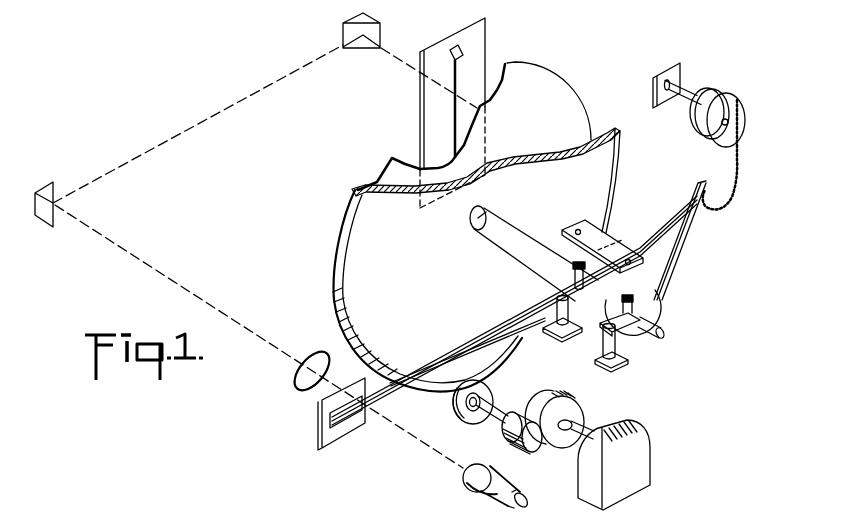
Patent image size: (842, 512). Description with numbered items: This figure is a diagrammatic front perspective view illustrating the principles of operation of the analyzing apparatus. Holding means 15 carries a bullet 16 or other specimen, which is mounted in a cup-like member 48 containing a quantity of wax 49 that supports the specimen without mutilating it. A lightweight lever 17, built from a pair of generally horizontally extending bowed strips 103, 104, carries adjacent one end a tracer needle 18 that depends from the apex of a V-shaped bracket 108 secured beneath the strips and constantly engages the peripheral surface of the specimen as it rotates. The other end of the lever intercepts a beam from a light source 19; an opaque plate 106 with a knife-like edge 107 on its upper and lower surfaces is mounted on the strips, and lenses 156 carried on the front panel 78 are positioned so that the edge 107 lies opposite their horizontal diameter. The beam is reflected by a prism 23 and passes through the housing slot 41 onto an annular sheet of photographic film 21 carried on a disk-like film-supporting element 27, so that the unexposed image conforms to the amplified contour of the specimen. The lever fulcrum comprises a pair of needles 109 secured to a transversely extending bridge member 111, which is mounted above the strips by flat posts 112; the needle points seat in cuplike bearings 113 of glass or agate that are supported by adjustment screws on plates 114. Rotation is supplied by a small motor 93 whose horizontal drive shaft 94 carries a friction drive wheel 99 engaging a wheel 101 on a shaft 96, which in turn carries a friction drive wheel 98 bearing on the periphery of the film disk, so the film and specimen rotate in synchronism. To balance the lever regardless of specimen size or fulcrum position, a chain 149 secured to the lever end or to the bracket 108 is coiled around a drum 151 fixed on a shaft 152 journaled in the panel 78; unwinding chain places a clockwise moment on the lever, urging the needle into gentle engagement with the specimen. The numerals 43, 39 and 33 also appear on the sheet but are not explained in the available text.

The prism 23 is at (373, 20).
The housing slot 41 is at (456, 90).
The photographic film 21 is at (561, 86).
The film-supporting element 27 is at (574, 201).
The needles 109 is at (577, 246).
The bridge member 111 is at (603, 237).
The lever 17 is at (484, 322).
The bowed strip 103 is at (461, 344).
The bowed strip 104 is at (520, 330).
The V-shaped bracket 108 is at (673, 260).
The holding means 15 is at (678, 293).
The needle 18 is at (662, 311).
The bullet 16 is at (662, 328).
The wax 49 is at (635, 332).
The cup-like member 48 is at (627, 332).
The flat posts 112 is at (591, 292).
The cuplike bearings 113 is at (590, 332).
The plates 114 is at (618, 360).
The lenses 156 is at (306, 346).
The knife-like edge 107 is at (323, 403).
The opaque plate 106 is at (324, 424).
The friction drive wheel 98 is at (463, 422).
The shaft 96 is at (497, 403).
The friction drive wheel 101 is at (532, 452).
The friction drive wheel 99 is at (564, 405).
The drive shaft 94 is at (590, 424).
The motor 93 is at (648, 474).
The light source 19 is at (468, 485).
The shaft 152 is at (686, 87).
The drum 151 is at (744, 106).
The chain 149 is at (740, 194).
The element 43 is at (146, 505).
The element 39 is at (200, 505).
The element 33 is at (250, 505).
The front panel 78 is at (306, 505).